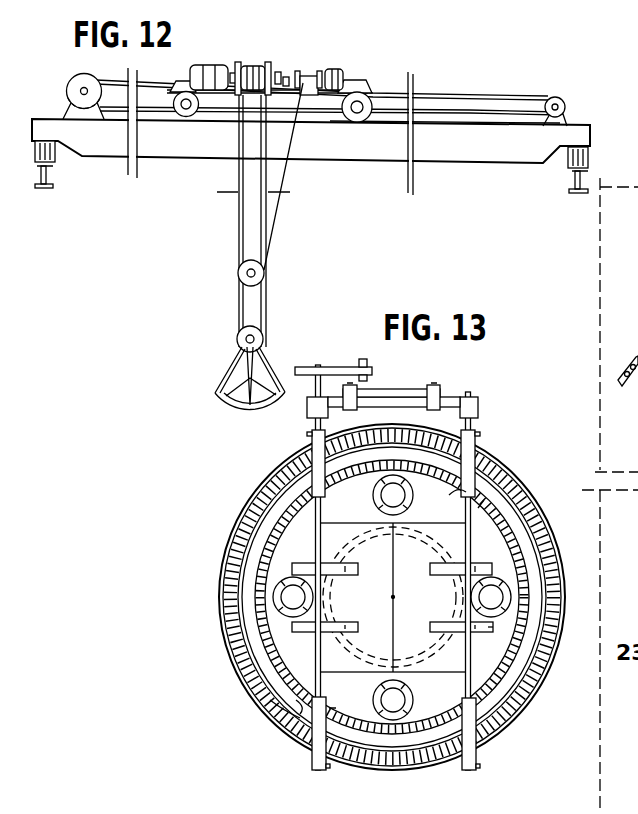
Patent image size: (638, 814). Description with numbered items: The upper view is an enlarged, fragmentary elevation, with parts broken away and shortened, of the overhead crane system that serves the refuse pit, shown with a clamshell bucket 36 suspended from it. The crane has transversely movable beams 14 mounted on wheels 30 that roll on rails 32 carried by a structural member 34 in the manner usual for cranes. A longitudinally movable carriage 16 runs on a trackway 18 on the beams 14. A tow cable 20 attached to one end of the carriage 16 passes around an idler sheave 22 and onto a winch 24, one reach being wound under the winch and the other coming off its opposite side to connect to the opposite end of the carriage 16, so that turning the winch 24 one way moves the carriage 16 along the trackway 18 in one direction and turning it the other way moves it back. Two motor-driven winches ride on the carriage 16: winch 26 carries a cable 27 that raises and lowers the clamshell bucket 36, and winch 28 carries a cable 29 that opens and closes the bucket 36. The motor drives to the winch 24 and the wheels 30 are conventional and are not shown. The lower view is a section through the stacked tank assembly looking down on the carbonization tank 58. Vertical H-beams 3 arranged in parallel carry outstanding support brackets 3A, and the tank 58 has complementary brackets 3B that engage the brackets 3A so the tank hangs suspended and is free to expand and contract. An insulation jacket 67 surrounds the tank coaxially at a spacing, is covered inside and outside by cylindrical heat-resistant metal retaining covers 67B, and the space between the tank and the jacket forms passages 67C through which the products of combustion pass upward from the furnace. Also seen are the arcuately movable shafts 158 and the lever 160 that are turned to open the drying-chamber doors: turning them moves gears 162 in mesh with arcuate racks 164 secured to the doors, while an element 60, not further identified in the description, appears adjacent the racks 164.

In FIG. 12, the beams 14 is at (368, 150).
In FIG. 12, the carriage 16 is at (354, 91).
In FIG. 12, the trackway 18 is at (487, 117).
In FIG. 12, the rail 20 is at (145, 82).
In FIG. 12, the idler sheave 22 is at (567, 100).
In FIG. 12, the winch 24 is at (67, 88).
In FIG. 12, the winch 26 is at (253, 63).
In FIG. 12, the cable 27 is at (238, 208).
In FIG. 12, the winch 28 is at (307, 79).
In FIG. 12, the cable 29 is at (277, 222).
In FIG. 12, the wheels 30 is at (42, 152).
In FIG. 12, the rails 32 is at (50, 163).
In FIG. 12, the structural member 34 is at (47, 186).
In FIG. 12, the clamshell bucket 36 is at (220, 392).
In FIG. 13, the H-beams 3 is at (292, 714).
In FIG. 13, the support brackets 3A is at (388, 607).
In FIG. 13, the support brackets 3B is at (397, 602).
In FIG. 13, the carbonization tank 58 is at (252, 540).
In FIG. 13, the clamp 60 is at (496, 624).
In FIG. 13, the insulation jacket 67 is at (238, 624).
In FIG. 13, the cylindrical retaining covers 67B is at (262, 700).
In FIG. 13, the passages 67C is at (268, 705).
In FIG. 13, the arcuately movable shafts 158 is at (316, 420).
In FIG. 13, the lever 160 is at (367, 364).
In FIG. 13, the gears 162 is at (453, 590).
In FIG. 13, the arcuate racks 164 is at (482, 566).